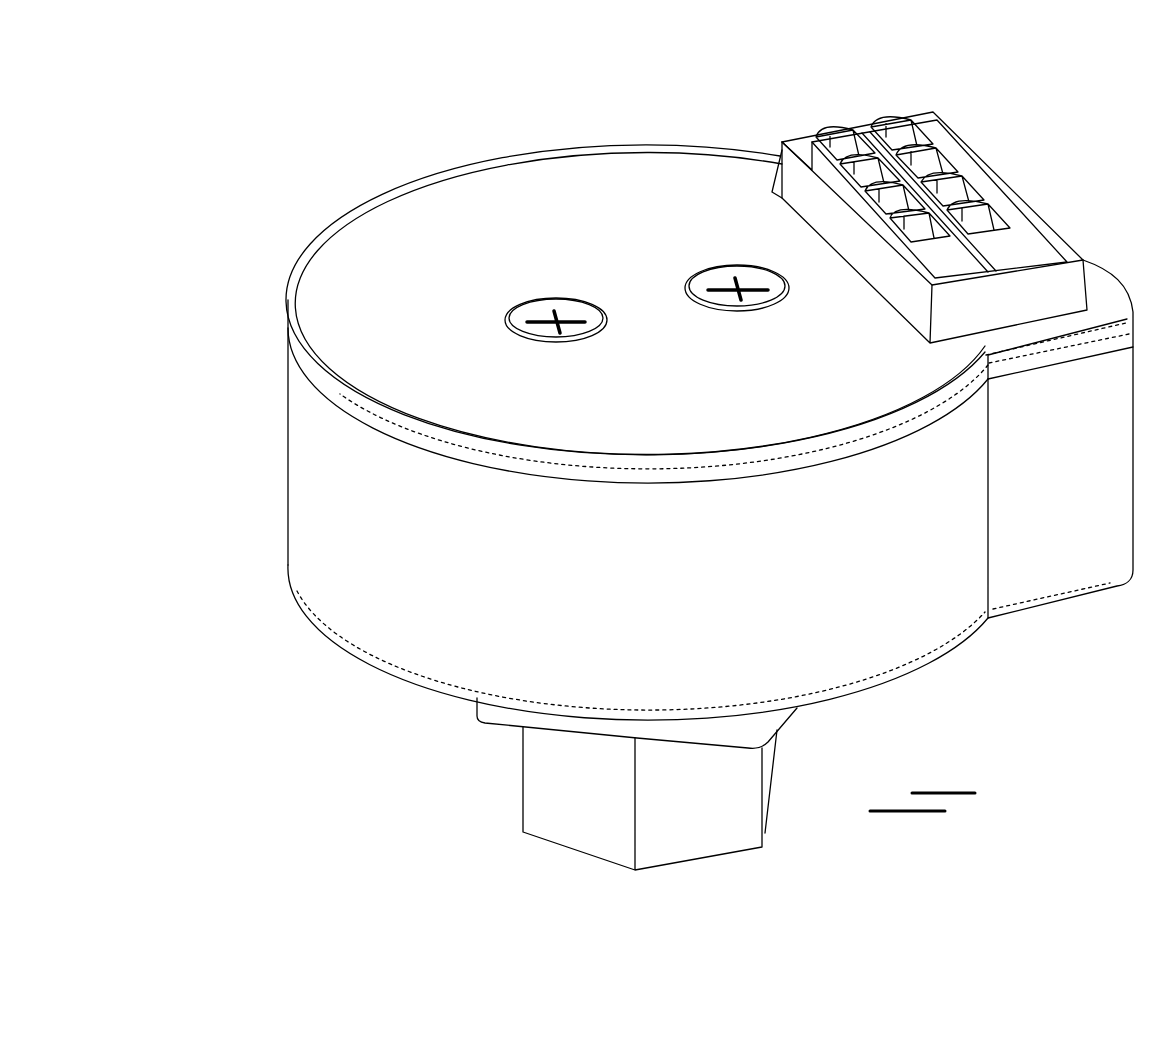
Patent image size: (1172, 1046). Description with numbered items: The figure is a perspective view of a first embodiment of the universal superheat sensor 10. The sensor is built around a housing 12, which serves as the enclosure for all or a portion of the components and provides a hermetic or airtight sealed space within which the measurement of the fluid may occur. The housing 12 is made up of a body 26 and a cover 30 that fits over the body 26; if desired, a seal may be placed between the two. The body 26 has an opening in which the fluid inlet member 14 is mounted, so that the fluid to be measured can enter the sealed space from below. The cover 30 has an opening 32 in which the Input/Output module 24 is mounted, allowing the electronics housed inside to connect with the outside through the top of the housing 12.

The universal superheat sensor 10 is at (258, 251).
The housing 12 is at (276, 469).
The fluid inlet member 14 is at (537, 797).
The Input/Output (IO) module 24 is at (1008, 183).
The body 26 is at (322, 583).
The cover 30 is at (565, 175).
The opening 32 is at (808, 142).